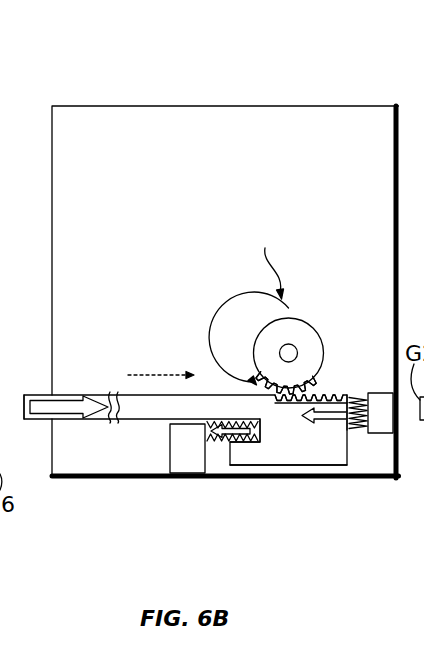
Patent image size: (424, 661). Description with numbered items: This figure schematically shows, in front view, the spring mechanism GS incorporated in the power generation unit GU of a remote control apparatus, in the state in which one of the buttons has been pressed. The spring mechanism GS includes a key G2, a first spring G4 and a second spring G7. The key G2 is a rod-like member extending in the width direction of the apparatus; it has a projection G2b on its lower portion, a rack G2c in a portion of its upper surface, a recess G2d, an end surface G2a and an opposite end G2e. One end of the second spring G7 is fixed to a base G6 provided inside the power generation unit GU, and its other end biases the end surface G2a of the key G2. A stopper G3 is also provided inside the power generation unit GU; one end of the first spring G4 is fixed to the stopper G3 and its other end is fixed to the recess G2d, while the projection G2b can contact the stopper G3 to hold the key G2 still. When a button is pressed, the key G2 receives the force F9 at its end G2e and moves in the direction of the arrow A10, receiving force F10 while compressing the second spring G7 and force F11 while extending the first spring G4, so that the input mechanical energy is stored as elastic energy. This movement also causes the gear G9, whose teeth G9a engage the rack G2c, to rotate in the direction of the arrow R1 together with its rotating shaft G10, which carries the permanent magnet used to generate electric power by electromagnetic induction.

The power generation unit GU is at (171, 105).
The spring mechanism GS is at (263, 261).
The rotation direction arrow R1 is at (244, 332).
The key G2 is at (99, 394).
The end surface of key G2a is at (349, 395).
The projection G2b is at (244, 467).
The rack G2c is at (268, 393).
The recess of key G2d is at (261, 433).
The end of key G2e is at (24, 398).
The stopper G3 is at (178, 453).
The first spring G4 is at (233, 419).
The base G6 is at (380, 428).
The second spring G7 is at (357, 430).
The gear G9 is at (296, 320).
The teeth of gear G9a is at (321, 378).
The rotating shaft G10 is at (294, 348).
The movement direction arrow A10 is at (161, 365).
The force F9 is at (58, 403).
The force F10 is at (327, 422).
The force F11 is at (219, 438).